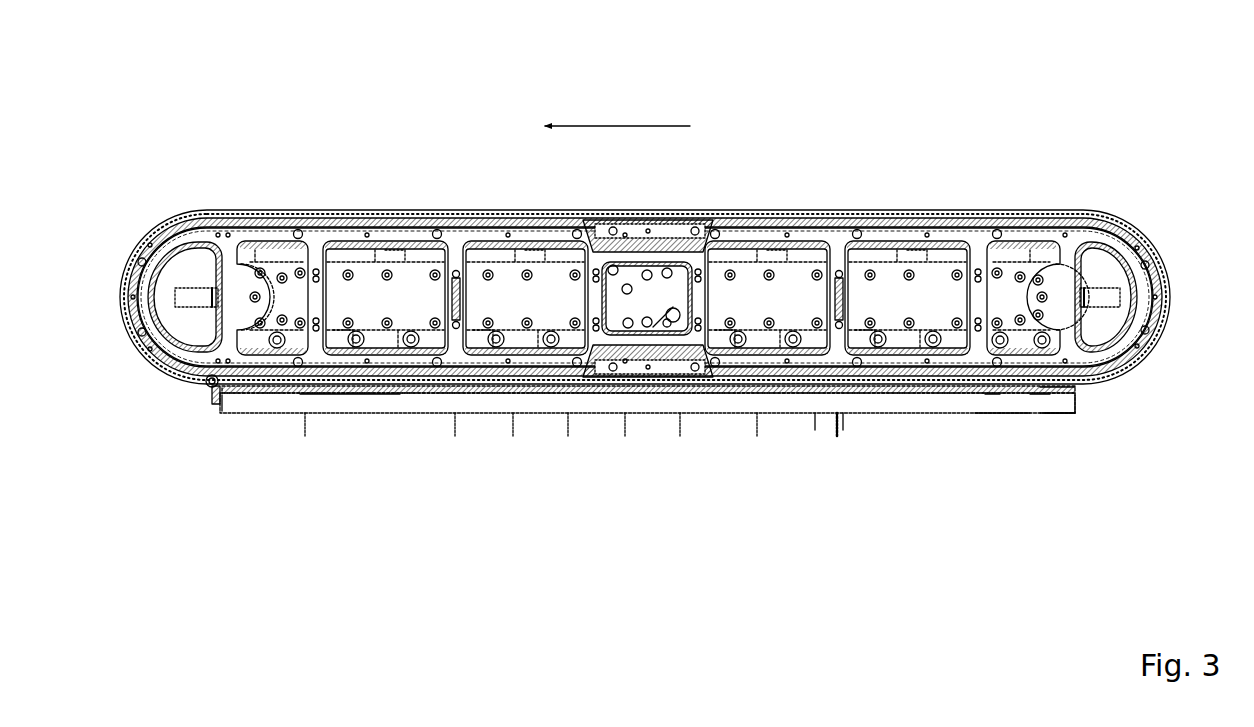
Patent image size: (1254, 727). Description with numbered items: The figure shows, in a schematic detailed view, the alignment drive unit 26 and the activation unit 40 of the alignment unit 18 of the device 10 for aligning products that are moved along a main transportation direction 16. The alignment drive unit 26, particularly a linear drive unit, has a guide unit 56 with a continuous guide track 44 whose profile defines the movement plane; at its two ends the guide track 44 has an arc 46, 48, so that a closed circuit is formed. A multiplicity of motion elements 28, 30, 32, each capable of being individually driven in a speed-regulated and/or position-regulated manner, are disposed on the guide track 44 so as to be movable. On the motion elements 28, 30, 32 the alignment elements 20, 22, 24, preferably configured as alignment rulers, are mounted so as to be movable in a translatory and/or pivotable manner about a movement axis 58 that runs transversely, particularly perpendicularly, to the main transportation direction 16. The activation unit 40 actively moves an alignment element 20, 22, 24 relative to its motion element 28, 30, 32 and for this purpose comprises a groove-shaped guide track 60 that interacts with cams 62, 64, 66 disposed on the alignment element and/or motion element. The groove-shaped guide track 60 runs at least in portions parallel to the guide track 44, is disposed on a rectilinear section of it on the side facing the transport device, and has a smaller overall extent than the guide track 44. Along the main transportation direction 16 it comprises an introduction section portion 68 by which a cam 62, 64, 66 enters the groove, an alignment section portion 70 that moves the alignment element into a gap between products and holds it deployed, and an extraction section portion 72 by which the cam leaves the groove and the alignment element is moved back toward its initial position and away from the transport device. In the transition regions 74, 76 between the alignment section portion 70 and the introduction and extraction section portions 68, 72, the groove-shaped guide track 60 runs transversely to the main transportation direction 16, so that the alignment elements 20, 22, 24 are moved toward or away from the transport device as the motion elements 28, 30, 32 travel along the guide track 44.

The device 10 is at (1148, 102).
The main transportation direction 16 is at (618, 125).
The alignment unit 18 is at (1112, 415).
The alignment element 20 is at (1073, 420).
The alignment element 22 is at (1015, 420).
The alignment element 24 is at (840, 413).
The alignment drive unit 26 is at (1106, 185).
The motion element 28 is at (1037, 398).
The motion element 30 is at (990, 390).
The motion element 32 is at (822, 418).
The activation unit 40 is at (207, 400).
The guide track 44 is at (900, 213).
The arc 46 is at (1177, 290).
The arc 48 is at (128, 268).
The guide unit 56 is at (973, 165).
The movement axis 58 is at (1080, 390).
The groove-shaped guide track 60 is at (540, 403).
The cam 62 is at (1052, 402).
The cam 64 is at (987, 397).
The cam 66 is at (838, 415).
The introduction section portion 68 is at (1005, 345).
The alignment section portion 70 is at (717, 403).
The extraction section portion 72 is at (258, 400).
The transition region 74 is at (928, 398).
The transition region 76 is at (372, 400).